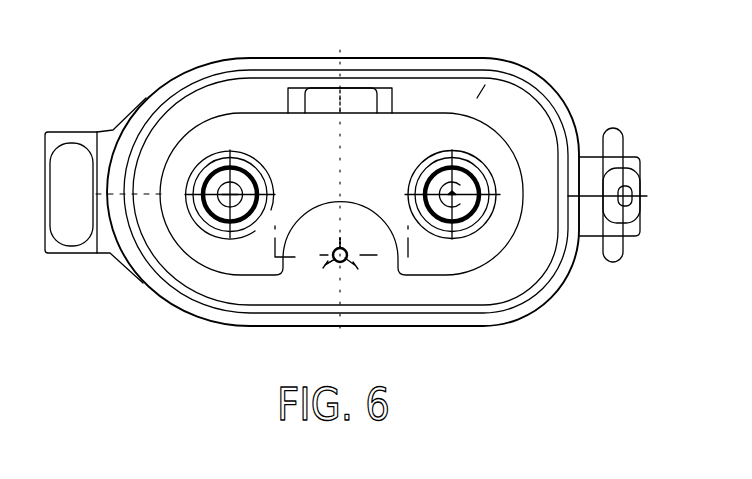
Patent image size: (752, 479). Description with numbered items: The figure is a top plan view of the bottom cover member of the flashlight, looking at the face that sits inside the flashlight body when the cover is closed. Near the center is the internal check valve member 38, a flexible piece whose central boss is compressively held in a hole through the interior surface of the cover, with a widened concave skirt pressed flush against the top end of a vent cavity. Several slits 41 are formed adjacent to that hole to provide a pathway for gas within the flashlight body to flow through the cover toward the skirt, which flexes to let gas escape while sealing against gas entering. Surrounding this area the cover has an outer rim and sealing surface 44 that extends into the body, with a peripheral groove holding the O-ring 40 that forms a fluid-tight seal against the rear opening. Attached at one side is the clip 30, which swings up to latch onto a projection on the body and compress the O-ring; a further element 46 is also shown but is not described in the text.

The clip 30 is at (645, 86).
The check valve member 38 is at (345, 252).
The O-ring 40 is at (208, 312).
The slits 41 is at (357, 262).
The outer rim and sealing surface 44 is at (543, 298).
The intermediate ring 46 is at (518, 83).